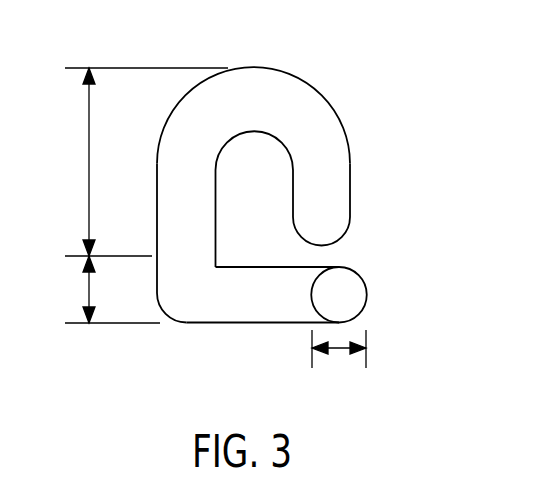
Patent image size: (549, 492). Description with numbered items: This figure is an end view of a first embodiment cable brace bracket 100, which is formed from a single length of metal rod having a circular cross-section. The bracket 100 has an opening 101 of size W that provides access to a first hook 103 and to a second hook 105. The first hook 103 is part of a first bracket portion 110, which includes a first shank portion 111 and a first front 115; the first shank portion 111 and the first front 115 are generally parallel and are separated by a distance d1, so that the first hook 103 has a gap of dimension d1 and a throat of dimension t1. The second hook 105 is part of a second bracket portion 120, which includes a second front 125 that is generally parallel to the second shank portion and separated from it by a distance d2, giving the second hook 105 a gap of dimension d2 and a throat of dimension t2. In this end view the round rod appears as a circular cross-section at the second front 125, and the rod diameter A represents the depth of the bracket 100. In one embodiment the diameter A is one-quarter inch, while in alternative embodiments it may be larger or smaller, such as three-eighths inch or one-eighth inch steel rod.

The cable brace bracket 100 is at (257, 163).
The opening 101 is at (396, 242).
The first hook 103 is at (235, 184).
The second hook 105 is at (235, 304).
The first bracket portion 110 is at (134, 162).
The first shank portion 111 is at (157, 165).
The first front 115 is at (350, 178).
The second bracket portion 120 is at (100, 289).
The second front 125 is at (367, 297).
The diameter of the rod A is at (339, 358).